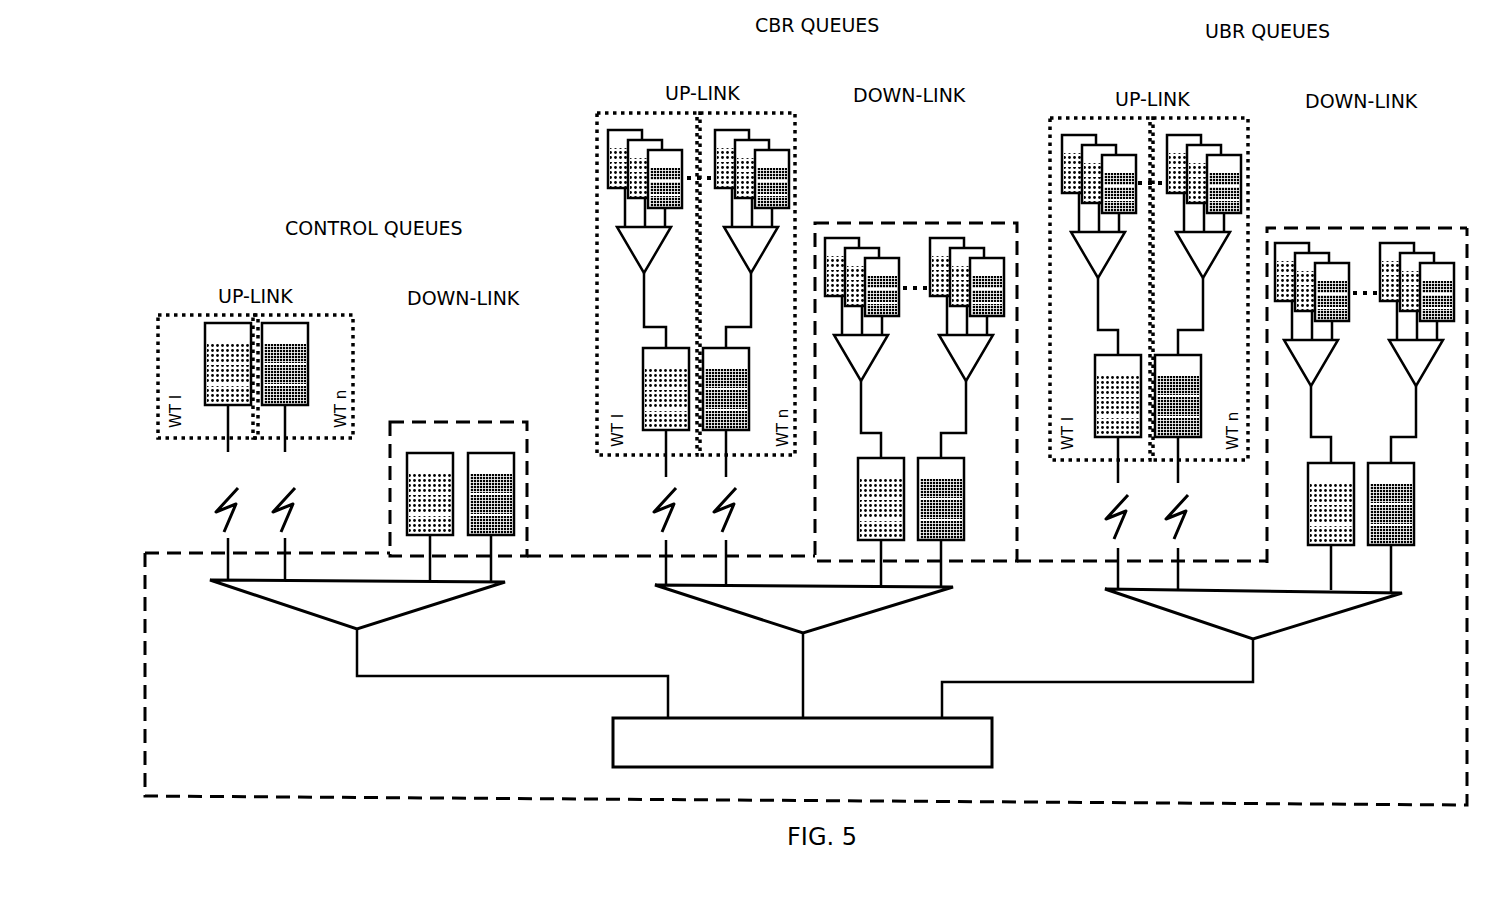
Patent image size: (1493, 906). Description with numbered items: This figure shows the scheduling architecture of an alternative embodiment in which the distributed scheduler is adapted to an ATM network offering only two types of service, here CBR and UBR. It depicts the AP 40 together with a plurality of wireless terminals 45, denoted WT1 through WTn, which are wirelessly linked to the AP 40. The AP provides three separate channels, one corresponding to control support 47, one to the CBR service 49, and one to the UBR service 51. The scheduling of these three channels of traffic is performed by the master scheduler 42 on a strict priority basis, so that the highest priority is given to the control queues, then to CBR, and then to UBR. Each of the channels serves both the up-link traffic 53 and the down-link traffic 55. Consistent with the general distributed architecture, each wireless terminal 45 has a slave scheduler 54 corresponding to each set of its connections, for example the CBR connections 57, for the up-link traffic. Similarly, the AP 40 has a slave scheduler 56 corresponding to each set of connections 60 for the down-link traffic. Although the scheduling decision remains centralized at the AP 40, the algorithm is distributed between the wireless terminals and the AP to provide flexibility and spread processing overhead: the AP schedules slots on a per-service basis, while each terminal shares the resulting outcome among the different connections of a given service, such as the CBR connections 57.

The access point 40 is at (447, 790).
The master scheduler 42 is at (980, 743).
The wireless terminals 45 is at (165, 320).
The control support channel 47 is at (292, 600).
The CBR service channel 49 is at (740, 608).
The UBR service channel 51 is at (1190, 610).
The up-link traffic 53 is at (303, 310).
The slave scheduler 54 is at (637, 247).
The down-link traffic 55 is at (445, 422).
The slave scheduler 56 is at (868, 355).
The CBR connections 57 is at (812, 155).
The set of connections 60 is at (916, 388).